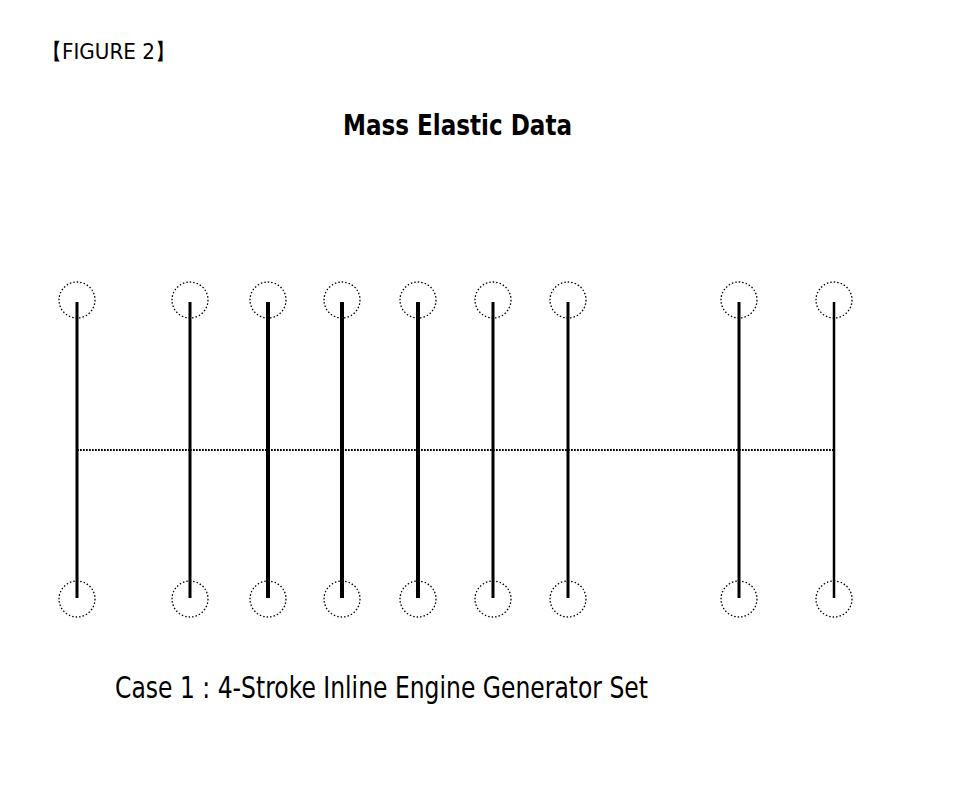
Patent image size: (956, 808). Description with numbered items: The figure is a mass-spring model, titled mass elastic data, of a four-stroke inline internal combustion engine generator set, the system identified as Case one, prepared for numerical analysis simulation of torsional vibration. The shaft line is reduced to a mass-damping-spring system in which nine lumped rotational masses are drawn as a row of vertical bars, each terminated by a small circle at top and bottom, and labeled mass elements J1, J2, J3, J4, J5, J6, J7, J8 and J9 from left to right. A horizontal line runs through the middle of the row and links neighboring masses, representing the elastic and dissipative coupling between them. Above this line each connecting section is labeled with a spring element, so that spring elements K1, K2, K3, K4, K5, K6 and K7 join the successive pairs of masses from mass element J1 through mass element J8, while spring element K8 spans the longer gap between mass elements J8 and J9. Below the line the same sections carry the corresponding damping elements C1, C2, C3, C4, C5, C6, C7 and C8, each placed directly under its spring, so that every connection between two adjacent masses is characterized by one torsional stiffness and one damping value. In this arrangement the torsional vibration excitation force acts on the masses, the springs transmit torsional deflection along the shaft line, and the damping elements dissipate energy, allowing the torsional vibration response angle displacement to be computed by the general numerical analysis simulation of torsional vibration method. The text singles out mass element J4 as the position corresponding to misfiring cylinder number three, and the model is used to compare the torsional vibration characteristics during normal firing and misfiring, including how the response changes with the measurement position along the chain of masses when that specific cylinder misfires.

The mass element J1 is at (77, 415).
The mass element J2 is at (190, 415).
The mass element J3 is at (268, 415).
The mass element (misfiring cylinder #3) J4 is at (342, 415).
The mass element J5 is at (418, 415).
The mass element J6 is at (493, 415).
The mass element J7 is at (568, 415).
The mass element J8 is at (739, 415).
The mass element J9 is at (834, 415).
The spring element K1 is at (133, 429).
The spring element K2 is at (229, 429).
The spring element K3 is at (305, 429).
The spring element K4 is at (380, 429).
The spring element K5 is at (455, 429).
The spring element K6 is at (530, 429).
The spring element K7 is at (653, 429).
The spring element K8 is at (786, 429).
The damping element C1 is at (133, 473).
The damping element C2 is at (229, 473).
The damping element C3 is at (305, 473).
The damping element C4 is at (380, 473).
The damping element C5 is at (455, 473).
The damping element C6 is at (530, 473).
The damping element C7 is at (653, 473).
The damping element C8 is at (786, 473).